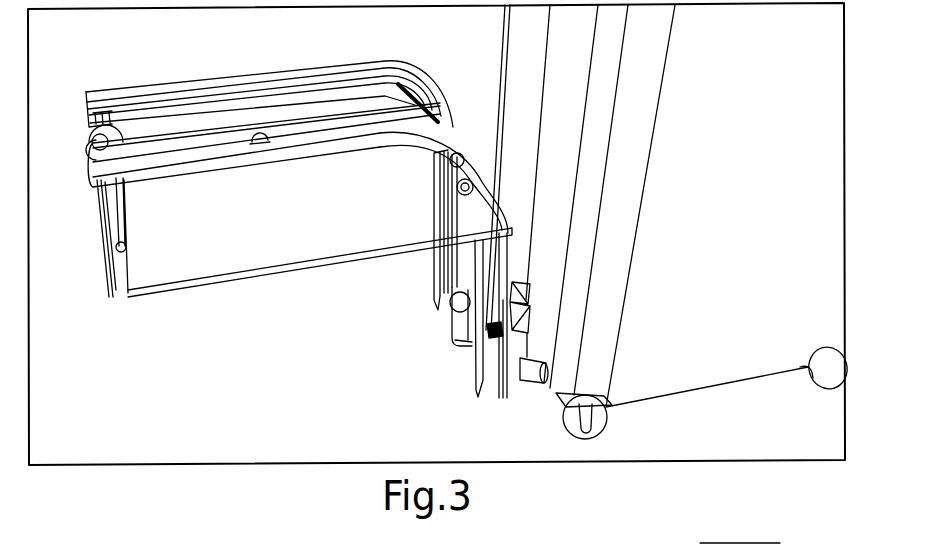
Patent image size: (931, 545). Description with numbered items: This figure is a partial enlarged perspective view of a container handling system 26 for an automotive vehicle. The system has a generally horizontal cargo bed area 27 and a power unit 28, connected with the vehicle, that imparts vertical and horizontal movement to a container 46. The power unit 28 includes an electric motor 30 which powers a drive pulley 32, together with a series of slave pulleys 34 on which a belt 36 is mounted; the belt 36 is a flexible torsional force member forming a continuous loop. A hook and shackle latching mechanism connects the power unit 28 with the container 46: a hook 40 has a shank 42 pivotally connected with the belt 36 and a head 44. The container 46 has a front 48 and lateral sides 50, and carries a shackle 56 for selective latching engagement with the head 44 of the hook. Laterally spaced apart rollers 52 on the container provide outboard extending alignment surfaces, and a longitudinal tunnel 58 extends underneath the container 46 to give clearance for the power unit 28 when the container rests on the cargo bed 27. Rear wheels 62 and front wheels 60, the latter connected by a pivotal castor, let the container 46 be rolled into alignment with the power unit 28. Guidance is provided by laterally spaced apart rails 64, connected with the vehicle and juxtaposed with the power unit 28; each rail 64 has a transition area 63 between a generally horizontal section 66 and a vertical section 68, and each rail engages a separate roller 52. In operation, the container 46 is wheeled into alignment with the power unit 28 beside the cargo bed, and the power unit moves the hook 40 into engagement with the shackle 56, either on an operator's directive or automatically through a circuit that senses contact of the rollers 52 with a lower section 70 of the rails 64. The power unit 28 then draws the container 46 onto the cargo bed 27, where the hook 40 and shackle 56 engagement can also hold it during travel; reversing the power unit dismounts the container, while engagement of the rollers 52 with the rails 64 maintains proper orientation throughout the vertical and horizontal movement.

The container handling system 26 is at (232, 52).
The cargo bed area 27 is at (262, 265).
The power unit 28 is at (76, 143).
The electric motor 30 is at (113, 122).
The drive pulley 32 is at (116, 165).
The slave pulleys 34 is at (270, 135).
The belt 36 is at (342, 110).
The hook 40 is at (453, 316).
The shank 42 is at (465, 345).
The head 44 is at (492, 355).
The container 46 is at (488, 48).
The front 48 is at (520, 109).
The lateral sides 50 is at (703, 234).
The rollers 52 is at (527, 382).
The shackle 56 is at (521, 300).
The longitudinal tunnel 58 is at (508, 398).
The front wheels 60 is at (612, 423).
The rear wheels 62 is at (806, 374).
The transition area 63 is at (481, 156).
The rails 64 is at (276, 158).
The horizontal section 66 is at (510, 258).
The vertical section 68 is at (192, 175).
The lower section 70 is at (487, 390).